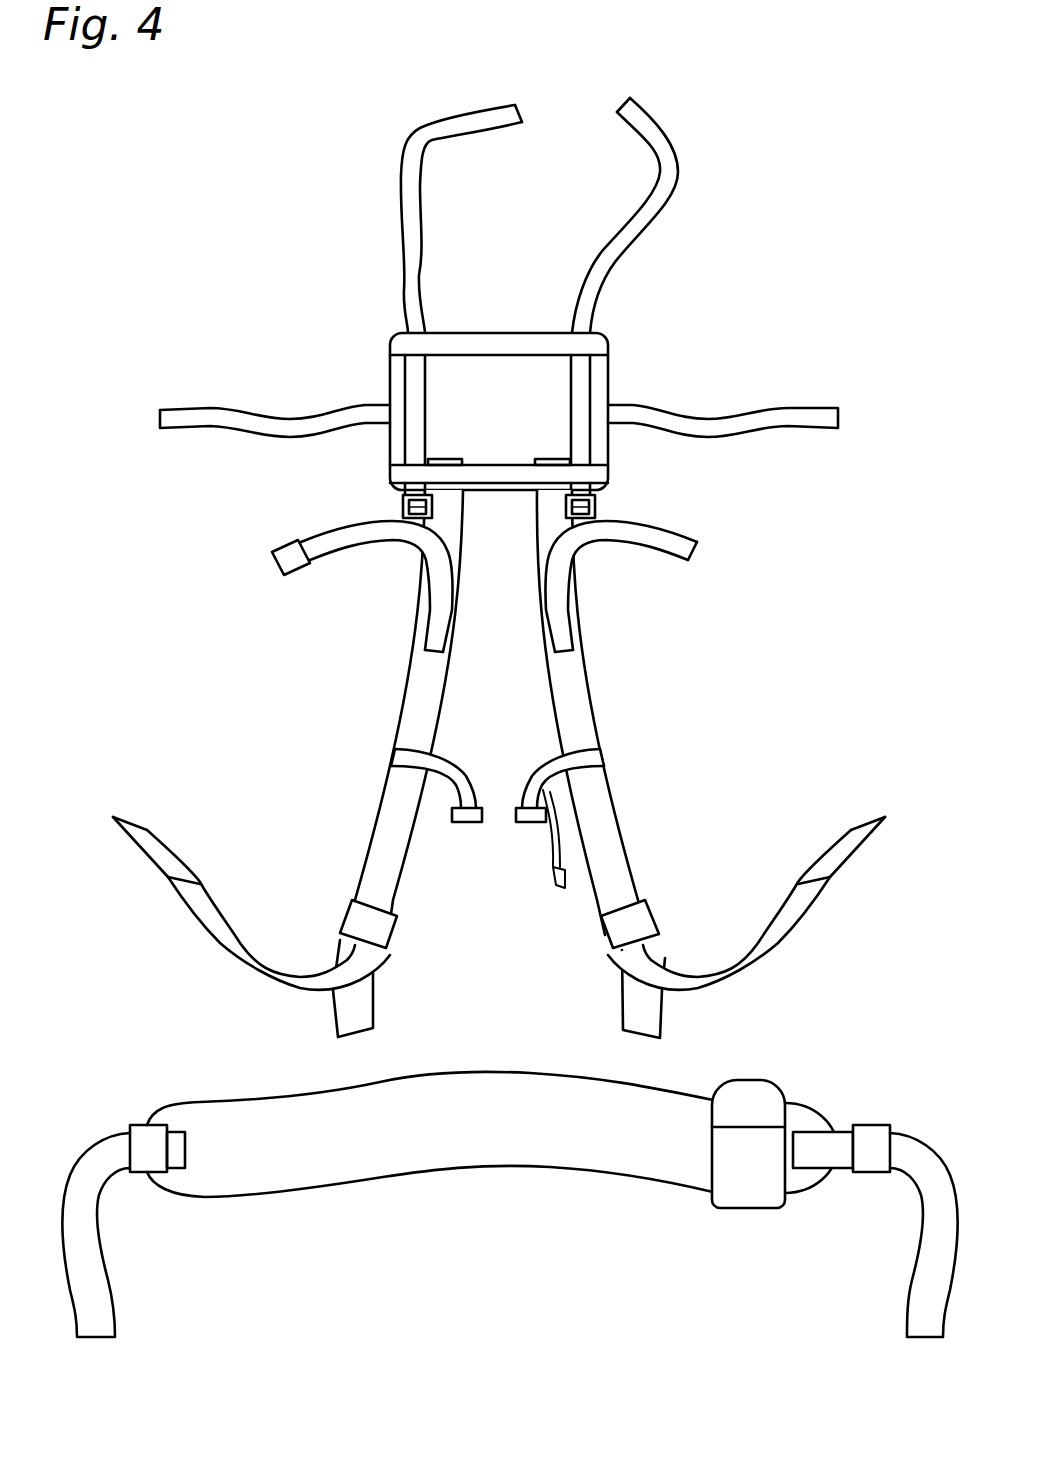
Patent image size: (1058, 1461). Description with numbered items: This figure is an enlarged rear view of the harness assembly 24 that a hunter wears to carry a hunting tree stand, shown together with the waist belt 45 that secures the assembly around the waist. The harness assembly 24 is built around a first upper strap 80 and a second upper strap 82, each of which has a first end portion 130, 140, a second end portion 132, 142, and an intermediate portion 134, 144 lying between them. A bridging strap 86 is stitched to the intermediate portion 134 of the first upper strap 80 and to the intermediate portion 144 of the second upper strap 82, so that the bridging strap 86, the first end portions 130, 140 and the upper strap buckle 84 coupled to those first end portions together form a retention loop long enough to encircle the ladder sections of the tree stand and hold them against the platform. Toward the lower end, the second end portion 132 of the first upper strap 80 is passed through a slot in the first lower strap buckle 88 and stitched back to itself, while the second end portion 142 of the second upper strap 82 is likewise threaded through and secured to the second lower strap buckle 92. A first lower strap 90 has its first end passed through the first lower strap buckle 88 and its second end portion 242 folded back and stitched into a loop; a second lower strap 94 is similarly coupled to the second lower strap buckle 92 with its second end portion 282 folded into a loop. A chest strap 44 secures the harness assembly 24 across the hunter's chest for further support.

The harness assembly 24 is at (351, 207).
The bridging strap 86 is at (517, 470).
The second upper strap 82 is at (423, 702).
The first upper strap 80 is at (575, 702).
The second end portion of the second upper strap 142 is at (382, 855).
The second end portion of the first upper strap 132 is at (615, 855).
The chest strap 44 is at (452, 762).
The intermediate portion of the second upper strap 144 is at (396, 488).
The intermediate portion of the first upper strap 134 is at (602, 490).
The first end portion of the second upper strap 140 is at (338, 531).
The first end portion of the first upper strap 130 is at (688, 540).
The upper strap buckle 84 is at (288, 546).
The second lower strap 94 is at (251, 894).
The first lower strap 90 is at (746, 894).
The second end portion of the second lower strap 282 is at (167, 833).
The second end portion of the first lower strap 242 is at (830, 833).
The second lower strap buckle 92 is at (348, 912).
The first lower strap buckle 88 is at (650, 912).
The waist belt 45 is at (797, 1115).